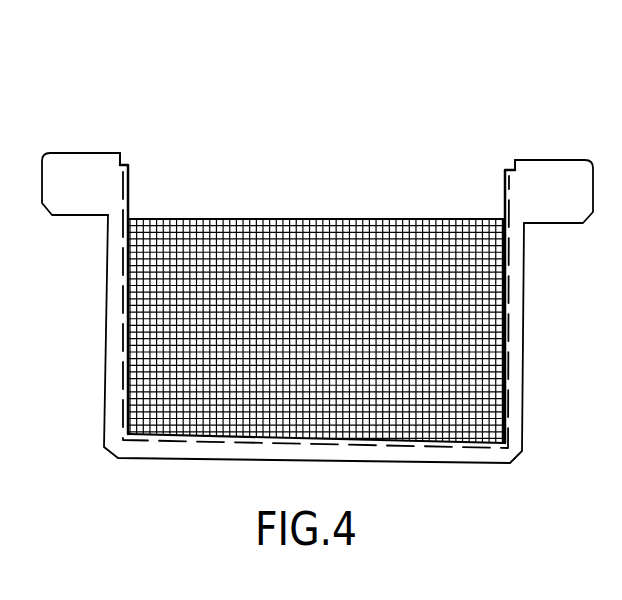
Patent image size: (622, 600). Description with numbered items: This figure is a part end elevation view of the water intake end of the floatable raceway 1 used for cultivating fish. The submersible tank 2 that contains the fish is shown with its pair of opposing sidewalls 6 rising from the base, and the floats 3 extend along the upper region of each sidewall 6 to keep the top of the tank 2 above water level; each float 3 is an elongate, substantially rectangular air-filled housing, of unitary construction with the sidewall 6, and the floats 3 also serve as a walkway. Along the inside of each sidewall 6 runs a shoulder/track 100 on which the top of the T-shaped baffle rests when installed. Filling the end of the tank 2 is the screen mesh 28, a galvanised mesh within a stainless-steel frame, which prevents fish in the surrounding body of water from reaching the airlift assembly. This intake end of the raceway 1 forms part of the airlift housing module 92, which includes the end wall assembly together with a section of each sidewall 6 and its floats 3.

The floatable raceway 1 is at (331, 279).
The submersible tank 2 is at (240, 213).
The floats 3 is at (88, 204).
The sidewalls 6 is at (130, 188).
The screen mesh 28 is at (457, 430).
The airlift housing module 92 is at (527, 412).
The shoulder/track 100 is at (128, 163).